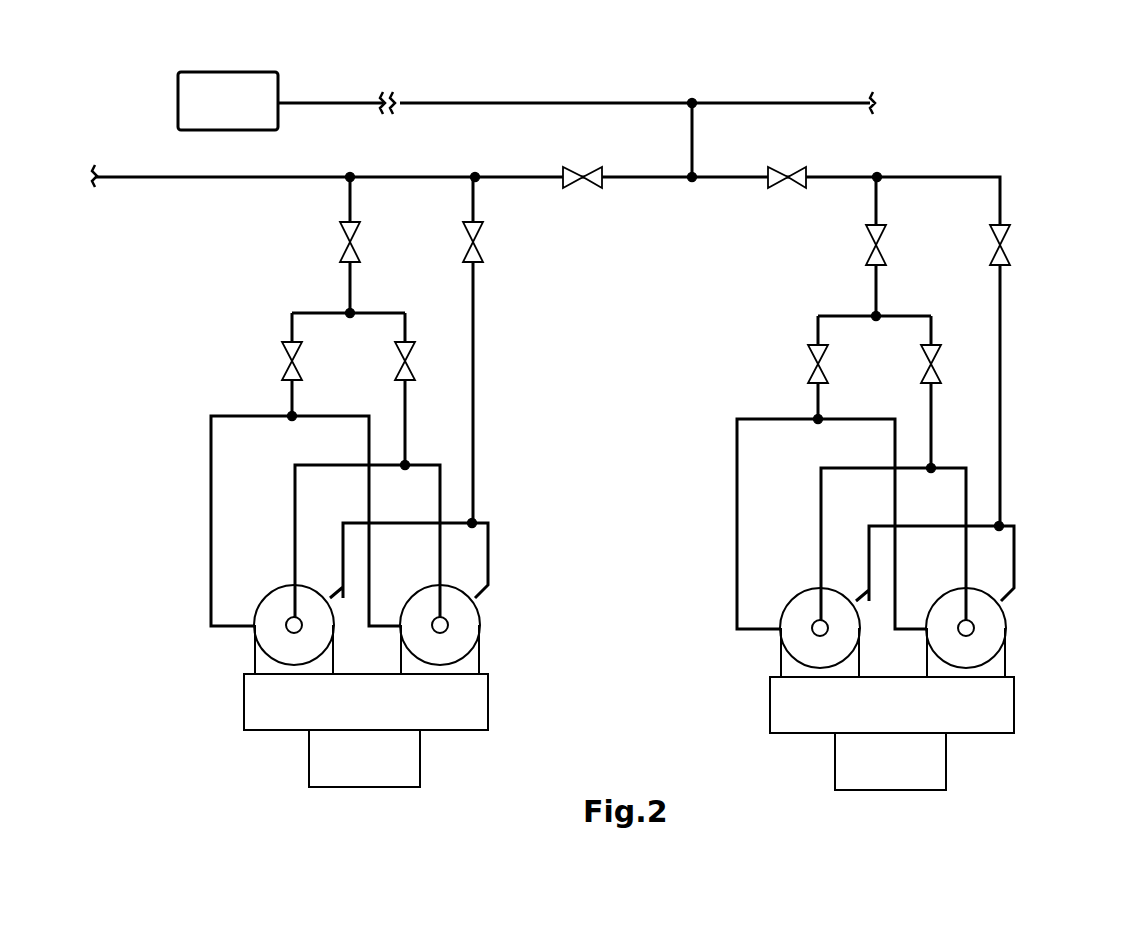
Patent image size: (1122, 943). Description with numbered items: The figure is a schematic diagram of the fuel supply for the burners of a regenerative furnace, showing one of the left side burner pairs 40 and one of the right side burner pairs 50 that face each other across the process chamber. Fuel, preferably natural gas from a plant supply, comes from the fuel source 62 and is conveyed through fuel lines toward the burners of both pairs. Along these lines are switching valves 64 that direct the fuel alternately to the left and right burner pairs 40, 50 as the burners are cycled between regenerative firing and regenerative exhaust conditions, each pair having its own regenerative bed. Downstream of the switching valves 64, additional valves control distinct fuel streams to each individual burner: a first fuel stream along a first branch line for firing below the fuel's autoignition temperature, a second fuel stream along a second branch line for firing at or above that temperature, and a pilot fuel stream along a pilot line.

The left side burner pair 40 is at (375, 482).
The right side burner pair 50 is at (873, 483).
The fuel source 62 is at (182, 86).
The switching valve 64 is at (590, 168).